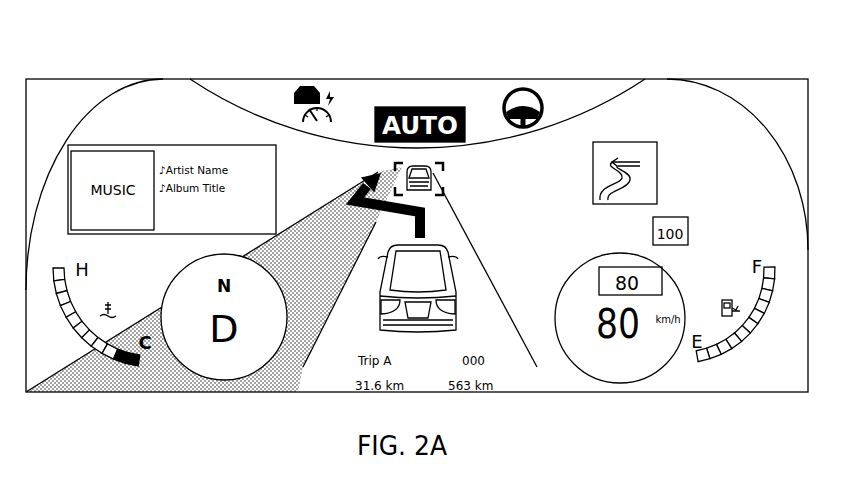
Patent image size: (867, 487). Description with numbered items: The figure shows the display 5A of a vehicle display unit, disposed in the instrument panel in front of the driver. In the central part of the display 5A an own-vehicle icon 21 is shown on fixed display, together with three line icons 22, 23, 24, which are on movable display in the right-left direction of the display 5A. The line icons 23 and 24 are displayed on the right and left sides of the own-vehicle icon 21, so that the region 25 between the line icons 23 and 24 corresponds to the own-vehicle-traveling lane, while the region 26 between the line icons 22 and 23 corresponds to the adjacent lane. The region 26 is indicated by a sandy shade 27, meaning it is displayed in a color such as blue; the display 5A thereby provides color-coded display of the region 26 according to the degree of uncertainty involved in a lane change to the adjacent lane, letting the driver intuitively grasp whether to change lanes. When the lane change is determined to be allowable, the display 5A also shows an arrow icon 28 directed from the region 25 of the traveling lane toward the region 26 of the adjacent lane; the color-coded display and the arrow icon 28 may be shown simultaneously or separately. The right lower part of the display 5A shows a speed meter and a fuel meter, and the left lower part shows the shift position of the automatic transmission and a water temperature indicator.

The display 5A is at (135, 78).
The own-vehicle icon 21 is at (457, 277).
The line icon 22 is at (294, 218).
The line icon 23 is at (338, 292).
The line icon 24 is at (463, 224).
The region 25 is at (443, 222).
The region 26 is at (326, 228).
The sandy shade 27 is at (280, 372).
The arrow icon 28 is at (430, 235).